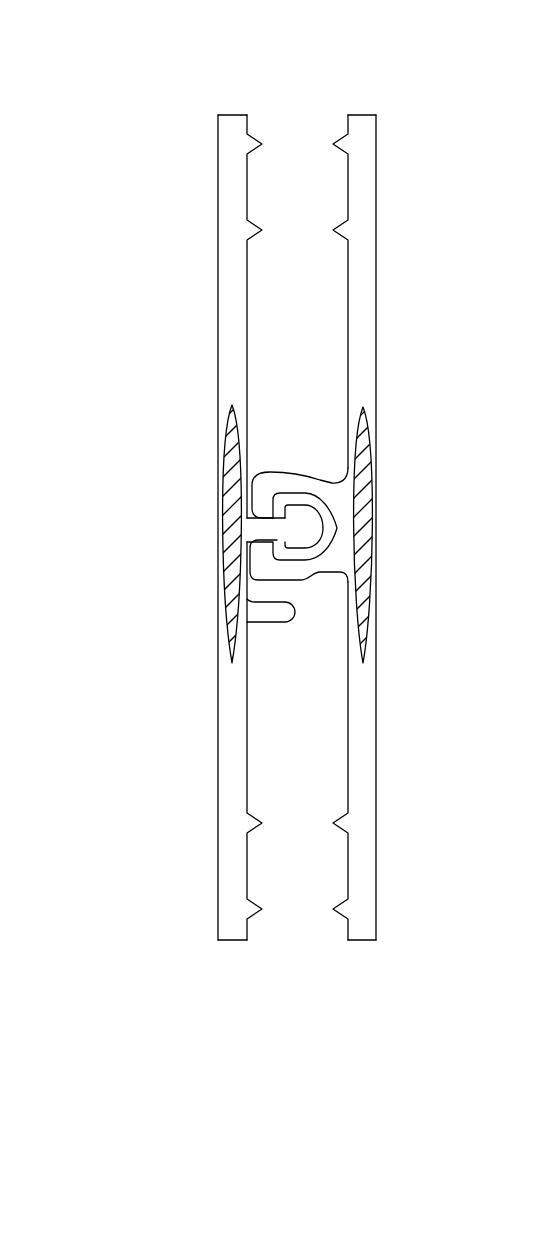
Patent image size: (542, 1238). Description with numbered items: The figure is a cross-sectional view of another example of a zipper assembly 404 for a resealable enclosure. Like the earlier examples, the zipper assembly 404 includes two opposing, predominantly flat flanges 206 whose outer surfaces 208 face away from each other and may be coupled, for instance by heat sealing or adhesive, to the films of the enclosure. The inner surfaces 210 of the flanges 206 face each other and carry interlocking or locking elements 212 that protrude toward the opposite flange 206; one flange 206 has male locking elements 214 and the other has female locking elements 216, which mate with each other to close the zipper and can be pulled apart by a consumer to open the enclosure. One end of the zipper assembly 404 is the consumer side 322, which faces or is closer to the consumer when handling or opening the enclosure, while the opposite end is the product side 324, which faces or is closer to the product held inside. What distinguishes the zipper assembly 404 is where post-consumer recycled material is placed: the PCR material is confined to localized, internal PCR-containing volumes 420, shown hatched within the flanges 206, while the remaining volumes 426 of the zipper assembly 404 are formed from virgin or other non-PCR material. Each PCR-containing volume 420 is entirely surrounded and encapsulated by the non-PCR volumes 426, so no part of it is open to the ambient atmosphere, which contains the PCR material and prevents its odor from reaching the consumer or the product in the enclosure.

The zipper assembly 404 is at (146, 171).
The consumer side 322 is at (294, 123).
The product side 324 is at (287, 941).
The outer surfaces 208 is at (295, 527).
The flanges 206 is at (217, 295).
The inner surfaces 210 is at (249, 204).
The non-PCR volumes 426 is at (360, 188).
The PCR-containing volumes 420 is at (362, 453).
The locking elements 212 is at (307, 545).
The male locking elements 214 is at (298, 530).
The female locking elements 216 is at (263, 488).